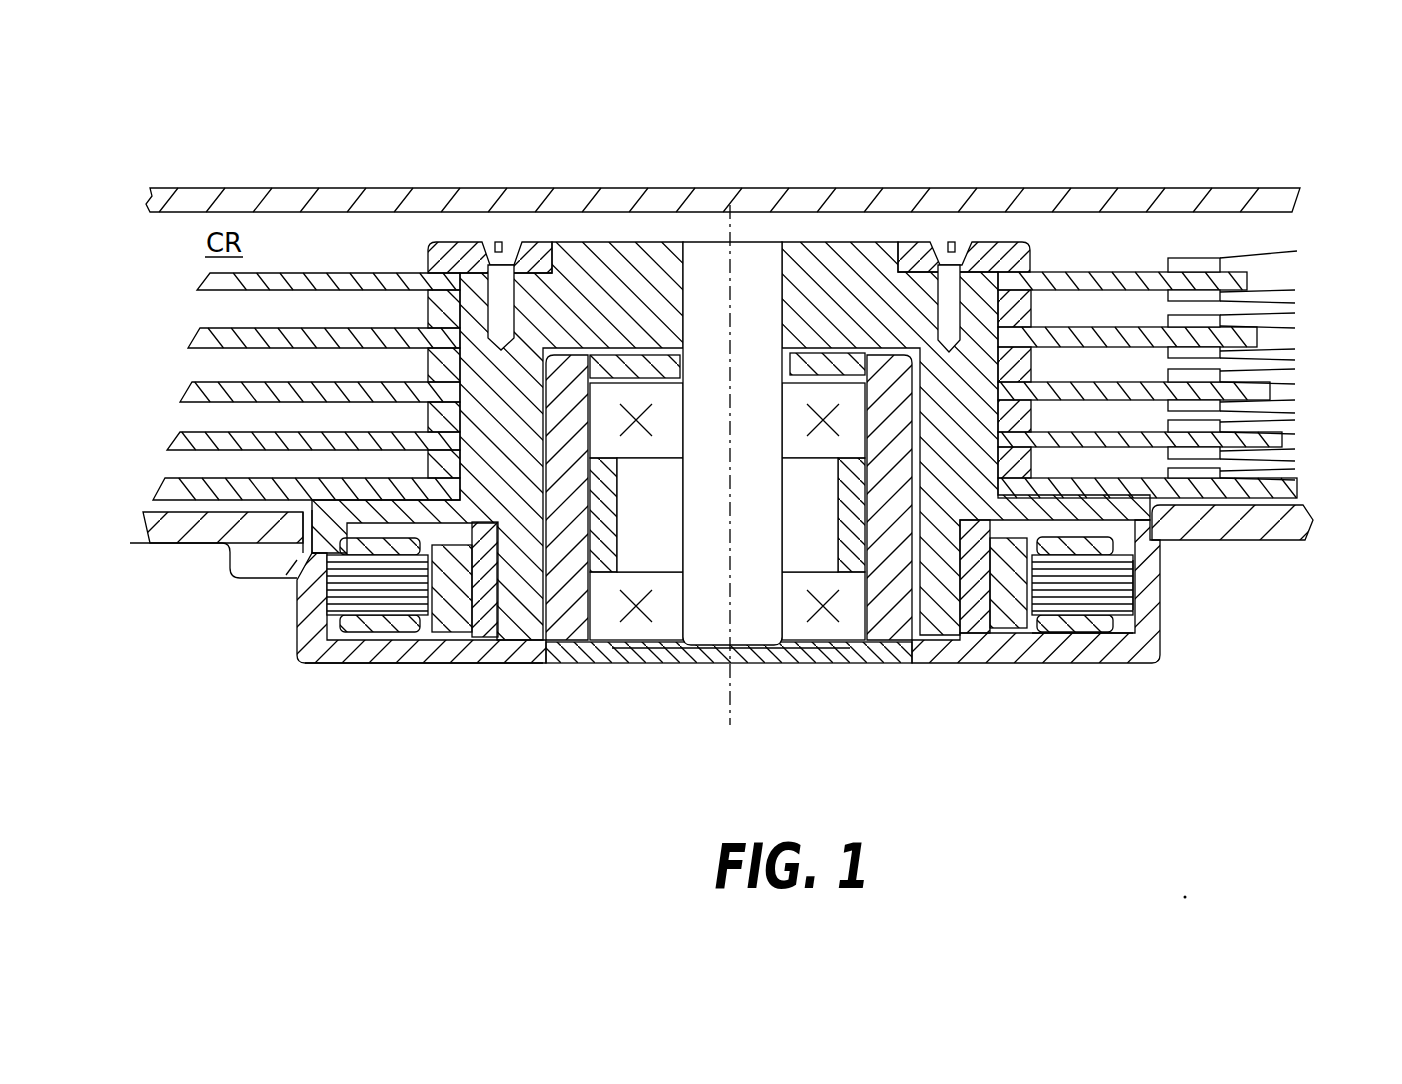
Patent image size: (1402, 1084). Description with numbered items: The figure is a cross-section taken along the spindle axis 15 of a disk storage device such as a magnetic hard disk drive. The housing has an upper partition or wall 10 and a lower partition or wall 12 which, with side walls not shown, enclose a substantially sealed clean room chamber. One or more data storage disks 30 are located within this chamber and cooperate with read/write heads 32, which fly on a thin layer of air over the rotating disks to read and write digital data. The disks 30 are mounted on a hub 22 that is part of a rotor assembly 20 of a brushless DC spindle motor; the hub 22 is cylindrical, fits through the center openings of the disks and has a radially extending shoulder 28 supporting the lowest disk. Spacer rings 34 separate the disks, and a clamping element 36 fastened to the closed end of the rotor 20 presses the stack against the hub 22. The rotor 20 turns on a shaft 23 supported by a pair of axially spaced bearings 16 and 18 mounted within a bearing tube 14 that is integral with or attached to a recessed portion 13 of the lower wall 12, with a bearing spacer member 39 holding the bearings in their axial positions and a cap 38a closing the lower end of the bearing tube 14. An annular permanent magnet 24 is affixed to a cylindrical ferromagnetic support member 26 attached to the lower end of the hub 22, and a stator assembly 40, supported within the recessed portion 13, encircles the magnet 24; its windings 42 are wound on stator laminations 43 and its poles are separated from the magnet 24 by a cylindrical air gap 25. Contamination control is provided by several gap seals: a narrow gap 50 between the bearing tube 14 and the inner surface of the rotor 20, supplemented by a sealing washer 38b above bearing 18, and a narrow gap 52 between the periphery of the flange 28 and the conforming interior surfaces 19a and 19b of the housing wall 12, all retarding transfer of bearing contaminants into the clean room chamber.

The upper partition or wall 10 is at (345, 187).
The lower partition or wall 12 is at (227, 574).
The recessed portion 13 is at (522, 663).
The bearing tube 14 is at (583, 498).
The spindle axis 15 is at (730, 680).
The bearing 16 is at (810, 634).
The bearing 18 is at (810, 462).
The conforming interior surface 19a is at (282, 556).
The conforming interior surface 19b is at (317, 554).
The rotor assembly 20 is at (701, 397).
The hub 22 is at (475, 328).
The shaft 23 is at (786, 540).
The permanent magnet 24 is at (444, 640).
The air gap 25 is at (1042, 633).
The cylindrical ferromagnetic support member 26 is at (486, 638).
The shoulder 28 is at (838, 352).
The data storage disks 30 is at (190, 340).
The read/write heads 32 is at (1185, 258).
The spacer rings 34 is at (430, 318).
The clamping element 36 is at (450, 243).
The cap 38a is at (766, 664).
The sealing washer 38b is at (795, 365).
The bearing spacer member 39 is at (655, 581).
The stator assembly 40 is at (786, 650).
The windings 42 is at (375, 638).
The stator laminations 43 is at (1126, 595).
The narrow gap 50 is at (549, 536).
The narrow gap 52 is at (296, 513).